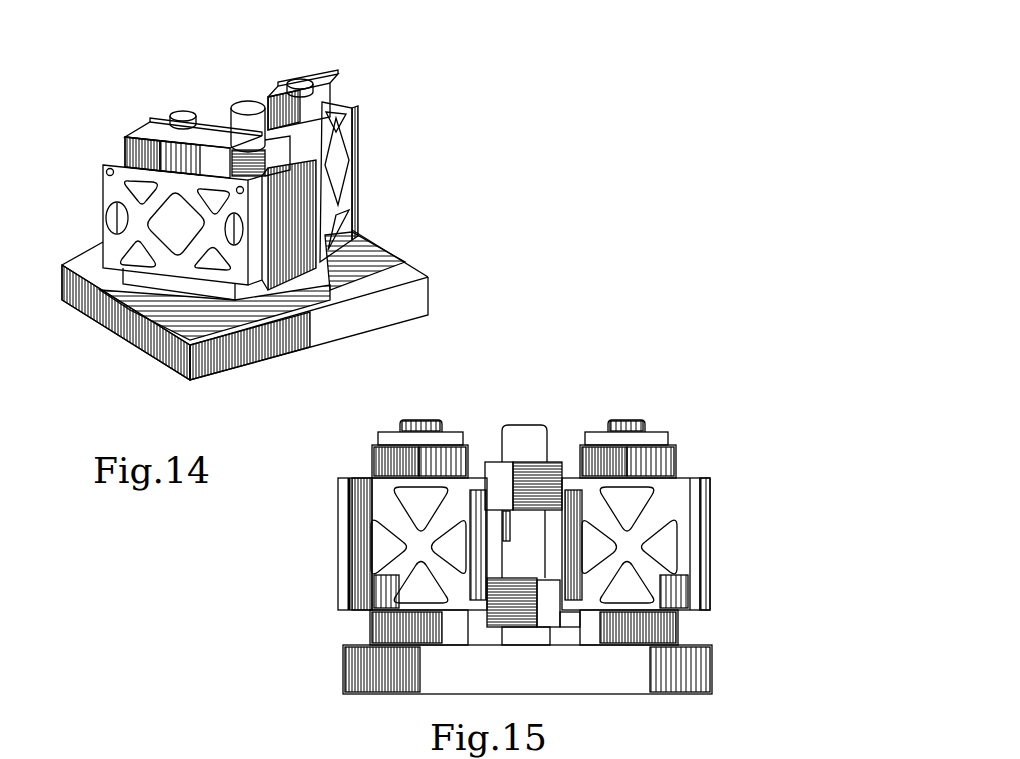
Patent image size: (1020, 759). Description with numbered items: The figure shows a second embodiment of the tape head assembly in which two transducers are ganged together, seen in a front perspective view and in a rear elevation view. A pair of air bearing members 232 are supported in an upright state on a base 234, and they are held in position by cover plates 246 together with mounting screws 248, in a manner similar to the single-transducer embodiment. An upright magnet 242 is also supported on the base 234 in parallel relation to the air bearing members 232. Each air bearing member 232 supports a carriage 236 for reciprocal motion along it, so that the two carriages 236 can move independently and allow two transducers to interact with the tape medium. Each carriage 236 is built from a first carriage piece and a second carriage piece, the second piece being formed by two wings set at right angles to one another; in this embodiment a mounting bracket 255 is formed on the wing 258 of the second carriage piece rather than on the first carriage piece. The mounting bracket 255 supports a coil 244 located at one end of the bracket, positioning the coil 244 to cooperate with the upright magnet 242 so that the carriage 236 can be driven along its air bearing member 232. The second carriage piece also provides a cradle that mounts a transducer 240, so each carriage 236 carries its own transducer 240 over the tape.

In FIG. 14, the air bearing member 232 is at (128, 148).
In FIG. 14, the base 234 is at (385, 265).
In FIG. 15, the base 234 is at (590, 682).
In FIG. 14, the carriage 236 is at (105, 246).
In FIG. 15, the carriage 236 is at (343, 534).
In FIG. 14, the transducer 240 is at (205, 407).
In FIG. 15, the transducer 240 is at (185, 758).
In FIG. 14, the upright magnet 242 is at (240, 110).
In FIG. 15, the upright magnet 242 is at (530, 432).
In FIG. 15, the coil 244 is at (522, 578).
In FIG. 14, the cover plate 246 is at (147, 125).
In FIG. 15, the cover plate 246 is at (385, 433).
In FIG. 14, the mounting screw 248 is at (182, 116).
In FIG. 15, the mounting screw 248 is at (421, 421).
In FIG. 15, the mounting bracket 255 is at (498, 470).
In FIG. 15, the wing 258 is at (560, 618).